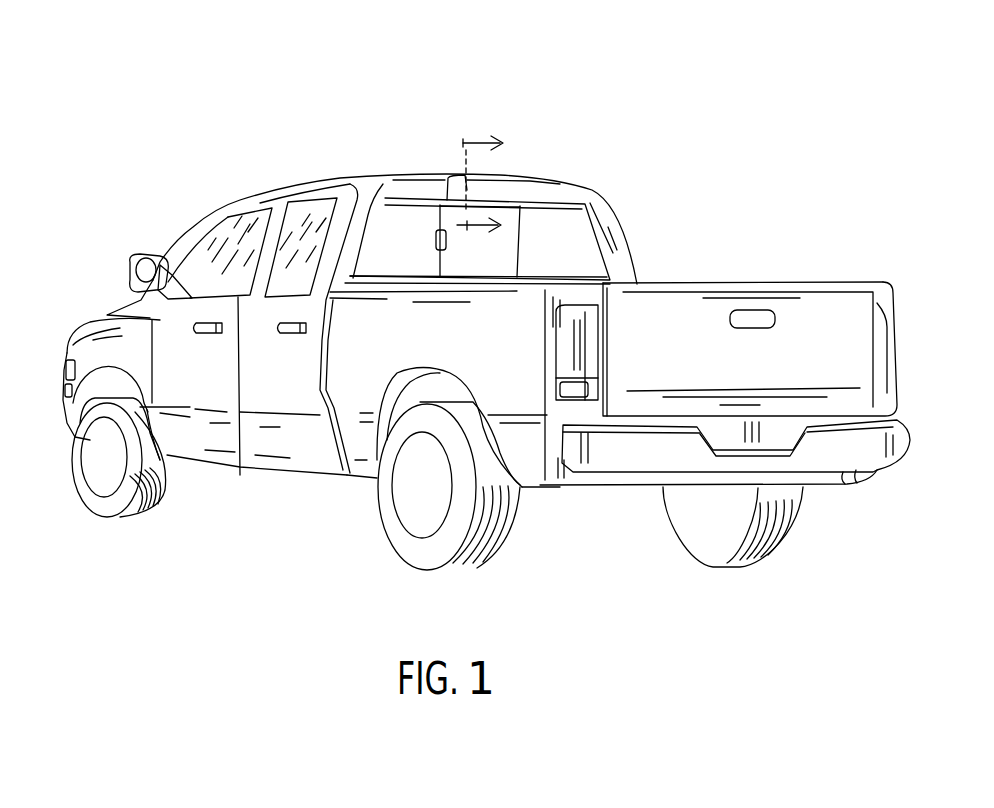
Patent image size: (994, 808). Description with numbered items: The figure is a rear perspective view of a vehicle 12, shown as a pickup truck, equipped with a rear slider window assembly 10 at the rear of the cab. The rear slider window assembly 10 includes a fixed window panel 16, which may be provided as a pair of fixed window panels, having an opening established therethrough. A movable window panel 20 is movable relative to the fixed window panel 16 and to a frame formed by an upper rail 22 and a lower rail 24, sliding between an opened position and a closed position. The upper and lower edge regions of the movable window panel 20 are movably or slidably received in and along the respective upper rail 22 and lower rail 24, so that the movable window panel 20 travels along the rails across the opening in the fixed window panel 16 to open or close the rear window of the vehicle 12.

The vehicle 12 is at (302, 131).
The rear slider window assembly 10 is at (560, 228).
The fixed window panel 16 is at (402, 215).
The movable window panel 20 is at (507, 213).
The upper rail 22 is at (415, 202).
The lower rail 24 is at (395, 277).